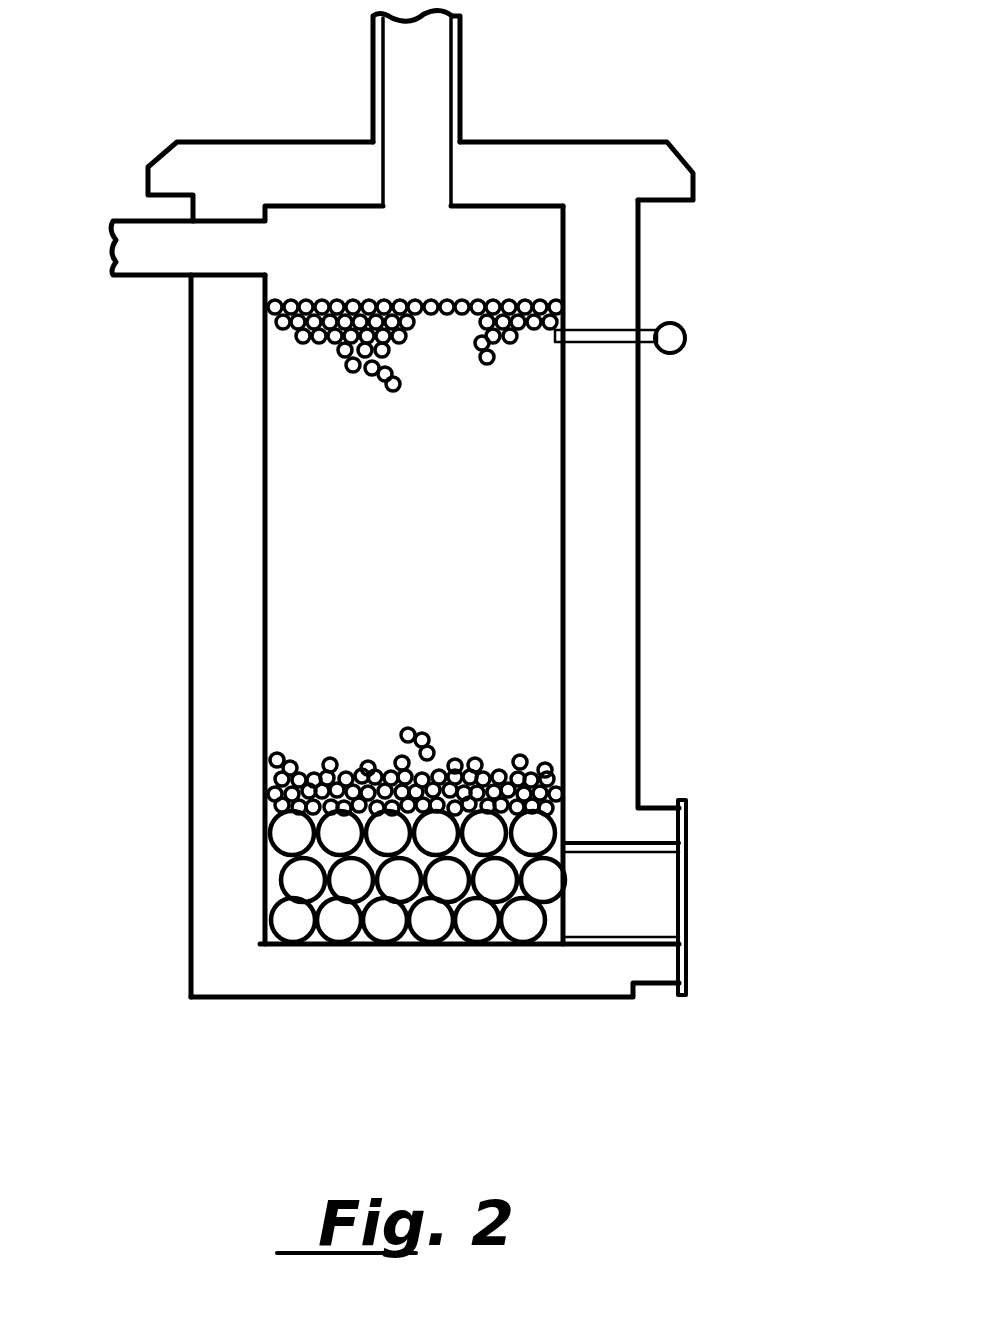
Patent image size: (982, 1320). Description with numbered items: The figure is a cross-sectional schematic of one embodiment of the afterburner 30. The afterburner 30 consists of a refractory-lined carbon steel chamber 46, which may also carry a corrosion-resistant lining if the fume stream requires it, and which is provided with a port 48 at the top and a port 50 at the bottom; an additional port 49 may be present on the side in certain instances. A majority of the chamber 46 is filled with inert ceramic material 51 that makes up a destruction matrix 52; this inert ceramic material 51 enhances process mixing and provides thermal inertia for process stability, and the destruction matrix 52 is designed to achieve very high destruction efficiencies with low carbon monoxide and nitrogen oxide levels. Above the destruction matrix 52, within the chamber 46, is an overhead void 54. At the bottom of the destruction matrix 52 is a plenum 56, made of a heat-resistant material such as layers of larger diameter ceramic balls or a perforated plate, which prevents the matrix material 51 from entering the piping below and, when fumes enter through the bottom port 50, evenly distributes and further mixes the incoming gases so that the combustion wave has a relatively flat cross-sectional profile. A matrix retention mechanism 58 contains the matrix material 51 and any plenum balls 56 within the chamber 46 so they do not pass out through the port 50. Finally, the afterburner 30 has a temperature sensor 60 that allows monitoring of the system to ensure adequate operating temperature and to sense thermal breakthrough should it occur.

The afterburner 30 is at (776, 578).
The chamber 46 is at (190, 583).
The port 48 is at (433, 78).
The additional port 49 is at (158, 255).
The port 50 is at (690, 887).
The inert ceramic material 51 is at (432, 557).
The destruction matrix 52 is at (535, 468).
The overhead void 54 is at (522, 267).
The plenum 56 is at (428, 927).
The matrix retention mechanism 58 is at (623, 910).
The temperature sensor 60 is at (685, 335).